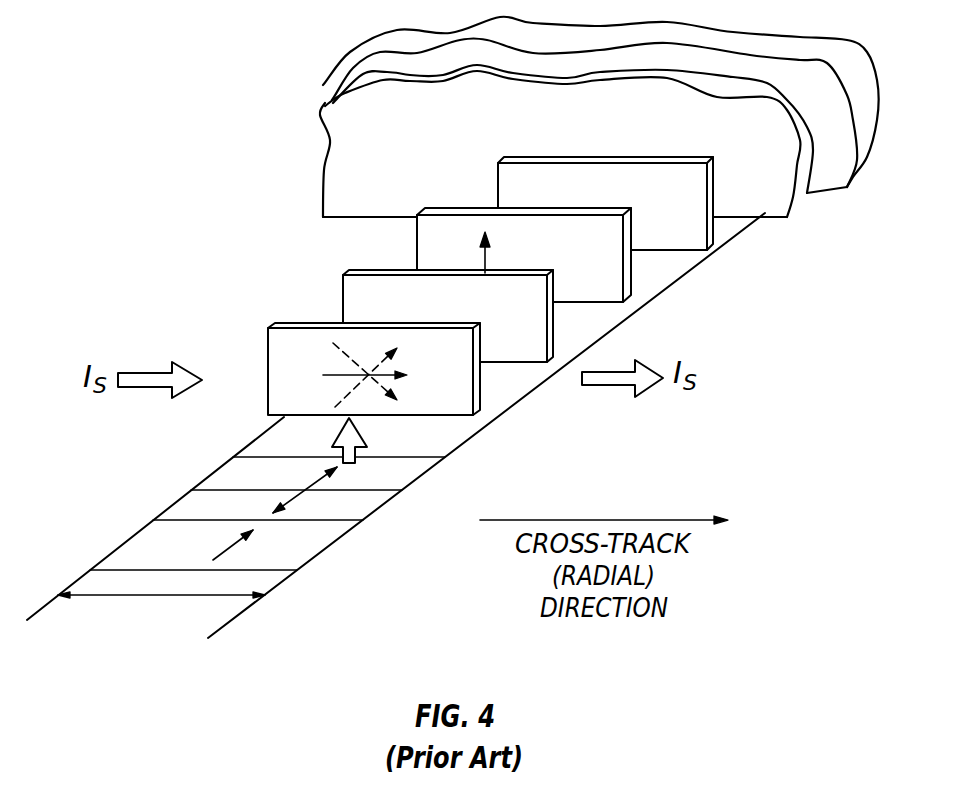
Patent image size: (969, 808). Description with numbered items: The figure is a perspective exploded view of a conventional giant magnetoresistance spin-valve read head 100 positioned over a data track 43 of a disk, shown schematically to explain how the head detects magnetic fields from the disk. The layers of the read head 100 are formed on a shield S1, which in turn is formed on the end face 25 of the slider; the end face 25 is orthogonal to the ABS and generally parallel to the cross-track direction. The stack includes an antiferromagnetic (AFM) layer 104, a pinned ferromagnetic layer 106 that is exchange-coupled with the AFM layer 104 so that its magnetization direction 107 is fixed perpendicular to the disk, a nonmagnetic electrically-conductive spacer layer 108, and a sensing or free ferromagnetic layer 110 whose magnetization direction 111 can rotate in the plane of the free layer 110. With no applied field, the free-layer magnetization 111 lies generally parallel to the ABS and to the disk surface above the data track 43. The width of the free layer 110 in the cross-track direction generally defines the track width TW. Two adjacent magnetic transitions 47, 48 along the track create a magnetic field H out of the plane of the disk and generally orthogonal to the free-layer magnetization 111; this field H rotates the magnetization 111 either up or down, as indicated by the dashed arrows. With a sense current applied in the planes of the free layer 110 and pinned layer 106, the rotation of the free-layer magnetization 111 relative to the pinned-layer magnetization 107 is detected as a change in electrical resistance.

The end face of the slider 25 is at (817, 72).
The shield S1 is at (560, 144).
The air bearing surface ABS is at (830, 197).
The spin-valve read head 100 is at (395, 283).
The antiferromagnetic (AFM) layer 104 is at (497, 182).
The pinned ferromagnetic layer 106 is at (417, 258).
The nonmagnetic electrically-conductive spacer layer 108 is at (343, 303).
The free ferromagnetic layer 110 is at (268, 348).
The pinned-layer magnetization direction 107 is at (484, 247).
The free-layer magnetization direction 111 is at (352, 378).
The data track 43 is at (263, 583).
The magnetic transition 47 is at (378, 438).
The magnetic transition 48 is at (330, 485).
The magnetic field H is at (340, 457).
The track width TW is at (161, 612).